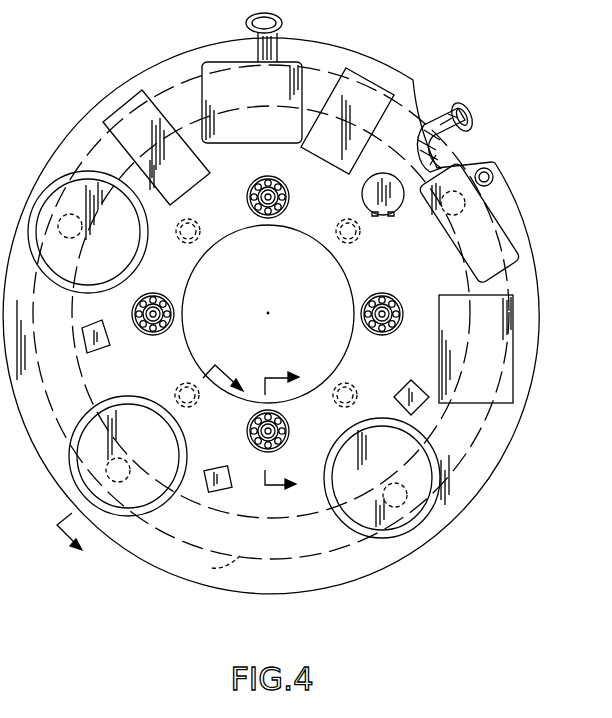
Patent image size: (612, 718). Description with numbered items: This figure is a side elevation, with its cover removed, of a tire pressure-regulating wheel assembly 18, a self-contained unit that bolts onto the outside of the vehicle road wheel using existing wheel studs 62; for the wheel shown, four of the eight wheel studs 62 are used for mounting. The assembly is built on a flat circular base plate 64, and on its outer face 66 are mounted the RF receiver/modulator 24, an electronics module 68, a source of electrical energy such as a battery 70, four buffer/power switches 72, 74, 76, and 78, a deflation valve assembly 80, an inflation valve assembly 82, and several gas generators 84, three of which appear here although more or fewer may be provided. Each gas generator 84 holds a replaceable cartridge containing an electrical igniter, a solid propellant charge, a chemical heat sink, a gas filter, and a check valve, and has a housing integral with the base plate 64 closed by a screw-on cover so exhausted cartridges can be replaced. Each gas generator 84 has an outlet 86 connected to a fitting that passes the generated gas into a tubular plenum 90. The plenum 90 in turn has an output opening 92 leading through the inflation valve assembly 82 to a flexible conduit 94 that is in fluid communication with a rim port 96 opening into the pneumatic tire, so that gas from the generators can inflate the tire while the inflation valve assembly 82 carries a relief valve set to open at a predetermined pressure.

The tire pressure-regulating wheel assembly 18 is at (271, 324).
The RF receiver/modulator 24 is at (352, 178).
The wheel studs 62 is at (184, 244).
The base plate 64 is at (257, 592).
The outer face 66 is at (365, 567).
The electronics module 68 is at (135, 94).
The battery 70 is at (439, 350).
The buffer/power switch 72 is at (97, 352).
The buffer/power switch 74 is at (212, 467).
The buffer/power switch 76 is at (397, 393).
The buffer/power switch 78 is at (383, 215).
The deflation valve assembly 80 is at (233, 145).
The inflation valve assembly 82 is at (462, 226).
The gas generators 84 is at (423, 522).
The outlet 86 is at (112, 458).
The tubular plenum 90 is at (271, 342).
The output opening 92 is at (458, 216).
The flexible conduit 94 is at (440, 118).
The rim port 96 is at (474, 118).